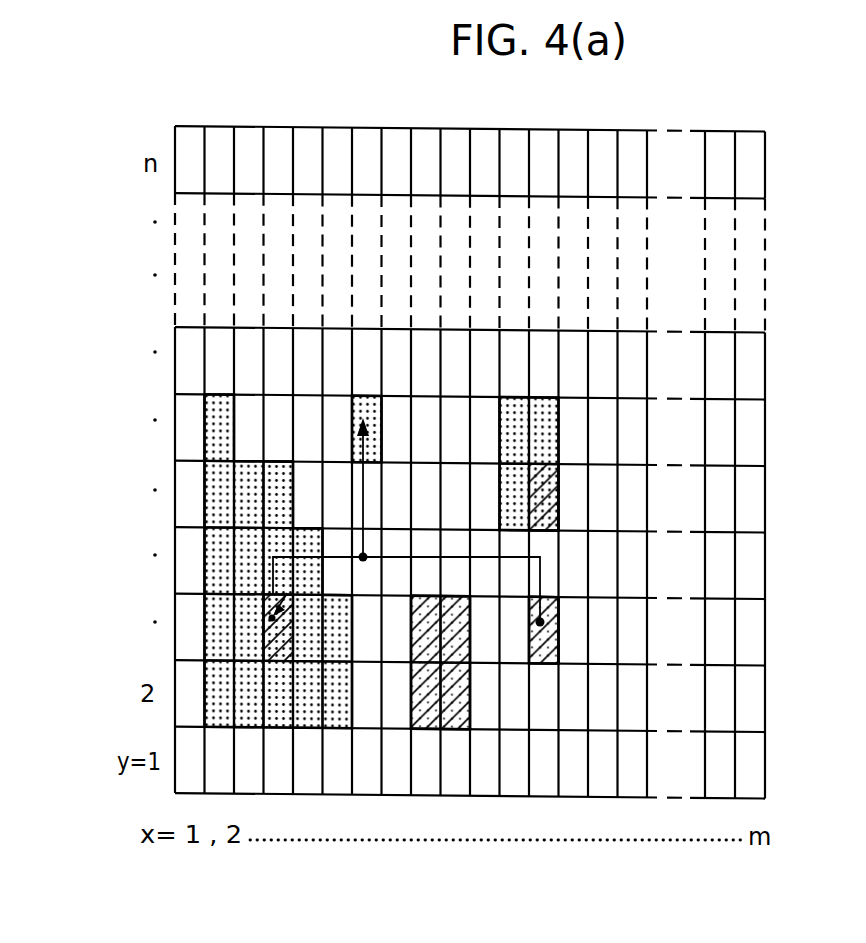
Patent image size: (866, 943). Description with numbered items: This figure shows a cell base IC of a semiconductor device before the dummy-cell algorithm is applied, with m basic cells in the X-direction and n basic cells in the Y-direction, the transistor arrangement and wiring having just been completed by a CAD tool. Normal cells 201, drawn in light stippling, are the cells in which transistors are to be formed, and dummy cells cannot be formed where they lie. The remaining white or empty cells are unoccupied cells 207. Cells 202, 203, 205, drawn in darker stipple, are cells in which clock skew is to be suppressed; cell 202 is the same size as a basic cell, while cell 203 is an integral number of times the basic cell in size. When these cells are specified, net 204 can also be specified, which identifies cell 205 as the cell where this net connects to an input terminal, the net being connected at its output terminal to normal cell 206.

The normal cells 201 is at (214, 428).
The cell in which clock skew is to be suppressed 202 is at (560, 497).
The cell in which clock skew is to be suppressed 203 is at (462, 730).
The net 204 is at (390, 562).
The cell in which clock skew is to be suppressed 205 is at (560, 639).
The normal cell 206 is at (362, 397).
The unoccupied cells 207 is at (745, 357).